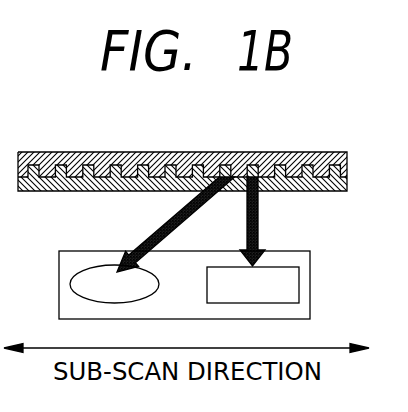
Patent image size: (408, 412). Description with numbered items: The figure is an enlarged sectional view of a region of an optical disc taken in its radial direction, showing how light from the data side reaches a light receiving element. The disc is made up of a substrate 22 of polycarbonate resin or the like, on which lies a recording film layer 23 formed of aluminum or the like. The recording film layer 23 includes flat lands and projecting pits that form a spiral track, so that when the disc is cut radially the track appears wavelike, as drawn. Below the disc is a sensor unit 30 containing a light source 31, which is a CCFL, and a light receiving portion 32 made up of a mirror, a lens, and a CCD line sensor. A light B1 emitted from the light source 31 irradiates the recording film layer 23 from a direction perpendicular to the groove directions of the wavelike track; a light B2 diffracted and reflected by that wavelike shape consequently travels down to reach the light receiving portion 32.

The substrate 22 is at (190, 162).
The recording film layer 23 is at (53, 166).
The sensor unit 30 is at (72, 250).
The light source 31 is at (148, 270).
The light receiving portion 32 is at (299, 278).
The light B1 is at (157, 223).
The light B2 is at (259, 222).